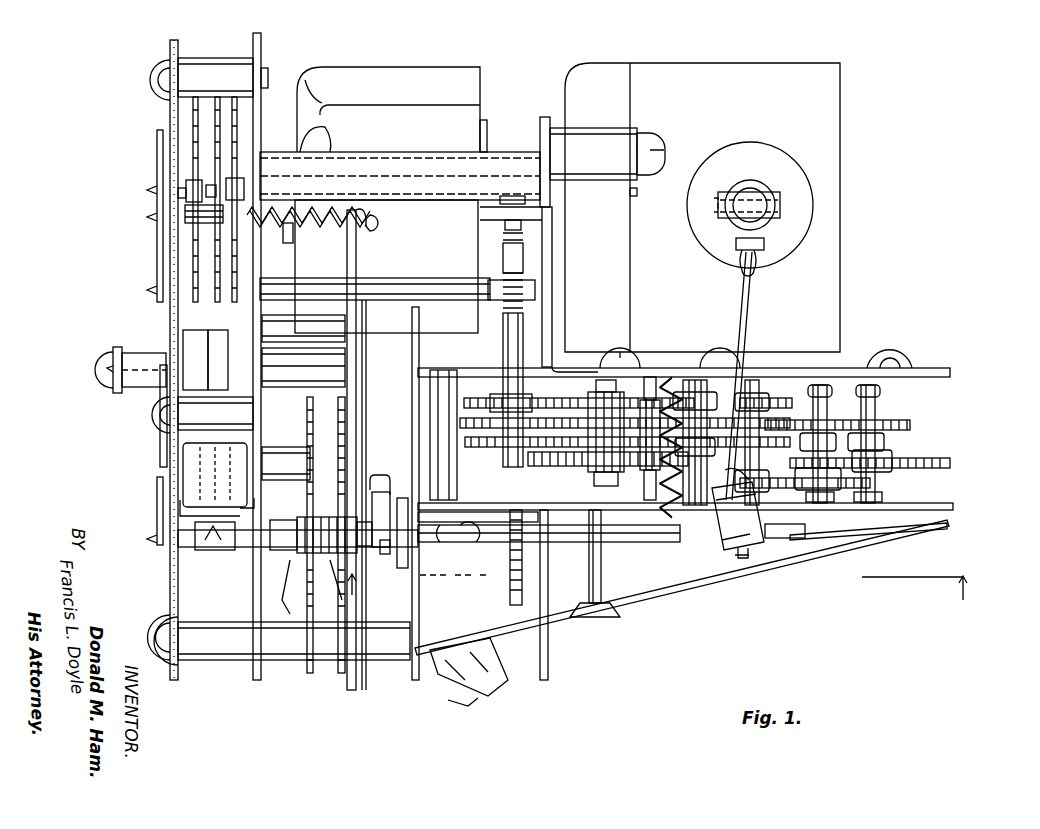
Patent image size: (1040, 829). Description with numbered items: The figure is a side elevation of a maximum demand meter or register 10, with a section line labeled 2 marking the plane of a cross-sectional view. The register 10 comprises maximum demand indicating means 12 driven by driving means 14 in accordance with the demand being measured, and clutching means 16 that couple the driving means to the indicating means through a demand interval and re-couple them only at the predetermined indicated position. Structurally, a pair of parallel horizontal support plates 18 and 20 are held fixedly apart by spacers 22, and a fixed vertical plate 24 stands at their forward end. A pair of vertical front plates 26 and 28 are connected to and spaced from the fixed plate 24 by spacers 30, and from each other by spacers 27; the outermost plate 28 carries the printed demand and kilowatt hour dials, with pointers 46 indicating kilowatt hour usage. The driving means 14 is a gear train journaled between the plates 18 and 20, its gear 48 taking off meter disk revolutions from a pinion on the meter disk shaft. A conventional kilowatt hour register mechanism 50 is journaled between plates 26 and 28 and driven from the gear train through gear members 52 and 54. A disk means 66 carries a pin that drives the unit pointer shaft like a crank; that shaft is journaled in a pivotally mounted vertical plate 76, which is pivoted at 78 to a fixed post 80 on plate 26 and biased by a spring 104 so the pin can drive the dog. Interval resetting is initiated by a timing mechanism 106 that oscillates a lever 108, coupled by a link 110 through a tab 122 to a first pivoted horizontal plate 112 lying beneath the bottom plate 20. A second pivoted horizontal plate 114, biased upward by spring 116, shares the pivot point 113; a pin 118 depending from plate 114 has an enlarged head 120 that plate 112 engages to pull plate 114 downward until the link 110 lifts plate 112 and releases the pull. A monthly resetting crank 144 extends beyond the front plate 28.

The maximum demand meter or register 10 is at (886, 323).
The maximum demand indicating means 12 is at (160, 505).
The driving means 14 is at (925, 435).
The clutching means 16 is at (376, 468).
The upper horizontal support plate 18 is at (947, 372).
The lower horizontal support plate 20 is at (955, 509).
The spacer 22 is at (448, 378).
The fixed vertical plate 24 is at (415, 680).
The vertical front plate 26 is at (257, 680).
The spacer 27 is at (206, 58).
The outermost front plate 28 is at (178, 680).
The spacer 30 is at (327, 640).
The kilowatt hour register pointers 46 is at (157, 243).
The gear 48 is at (950, 462).
The kilowatt hour register mechanism 50 is at (236, 118).
The gear member 52 is at (525, 310).
The gear member 54 is at (395, 284).
The disk means 66 is at (402, 494).
The pivotally mounted vertical plate 76 is at (365, 675).
The pivot 78 is at (357, 326).
The fixed post 80 is at (265, 330).
The biasing spring 104 is at (322, 217).
The timing mechanism 106 is at (843, 142).
The link or lever 108 is at (782, 198).
The link 110 is at (745, 306).
The first pivotally mounted horizontal plate 112 is at (658, 576).
The pivot point 113 is at (820, 542).
The second pivotally mounted horizontal plate 114 is at (896, 531).
The biasing spring 116 is at (722, 538).
The pin 118 is at (548, 600).
The enlarged head 120 is at (596, 616).
The tab 122 is at (756, 548).
The monthly resetting crank 144 is at (112, 385).
The section line 2 is at (656, 599).